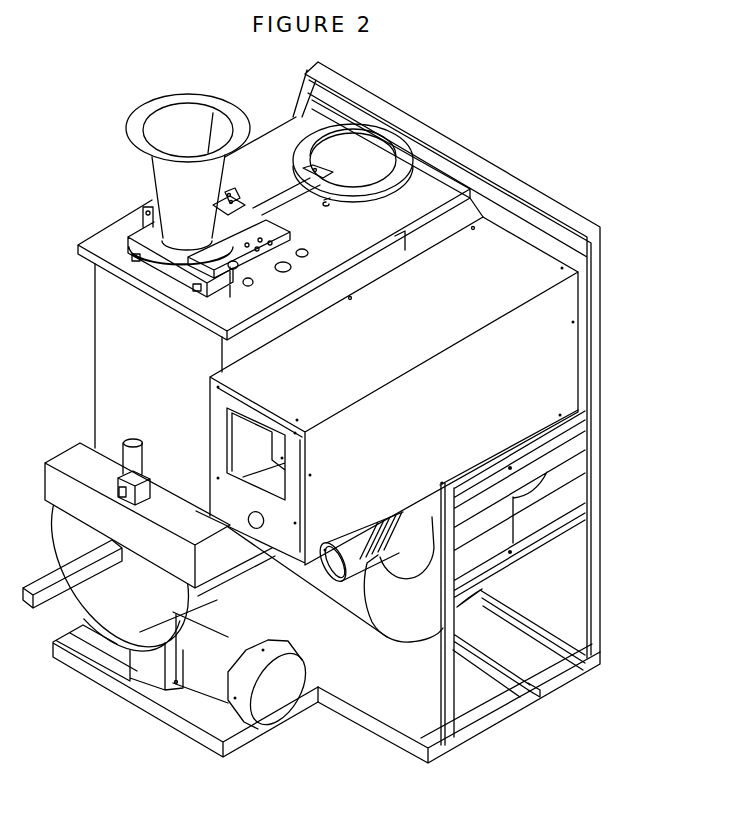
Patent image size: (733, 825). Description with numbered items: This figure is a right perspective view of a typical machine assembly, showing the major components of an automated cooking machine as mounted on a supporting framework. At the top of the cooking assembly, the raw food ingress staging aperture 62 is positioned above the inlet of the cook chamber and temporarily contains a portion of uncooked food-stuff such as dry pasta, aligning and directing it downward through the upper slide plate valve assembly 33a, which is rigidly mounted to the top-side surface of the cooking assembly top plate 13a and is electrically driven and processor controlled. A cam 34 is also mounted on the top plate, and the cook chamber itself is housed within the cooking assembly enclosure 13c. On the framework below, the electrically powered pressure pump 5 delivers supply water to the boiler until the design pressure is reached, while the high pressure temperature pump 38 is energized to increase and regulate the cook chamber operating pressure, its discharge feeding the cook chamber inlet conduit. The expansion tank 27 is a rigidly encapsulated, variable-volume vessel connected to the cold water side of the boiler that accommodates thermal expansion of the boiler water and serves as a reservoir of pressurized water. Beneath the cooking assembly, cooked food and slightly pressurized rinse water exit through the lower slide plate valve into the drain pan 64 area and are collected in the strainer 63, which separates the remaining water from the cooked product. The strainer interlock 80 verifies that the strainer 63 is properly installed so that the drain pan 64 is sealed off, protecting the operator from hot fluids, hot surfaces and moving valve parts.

The cooking assembly top plate 13a is at (260, 220).
The cooking assembly enclosure 13c is at (289, 323).
The raw food ingress staging aperture 62 is at (188, 184).
The cam 34 is at (313, 169).
The upper slide plate valve assembly 33a is at (239, 253).
The strainer interlock 80 is at (143, 472).
The strainer 63 is at (119, 578).
The drain pan 64 is at (250, 630).
The pressure pump 5 is at (245, 673).
The high pressure temperature pump 38 is at (374, 548).
The expansion tank 27 is at (403, 598).